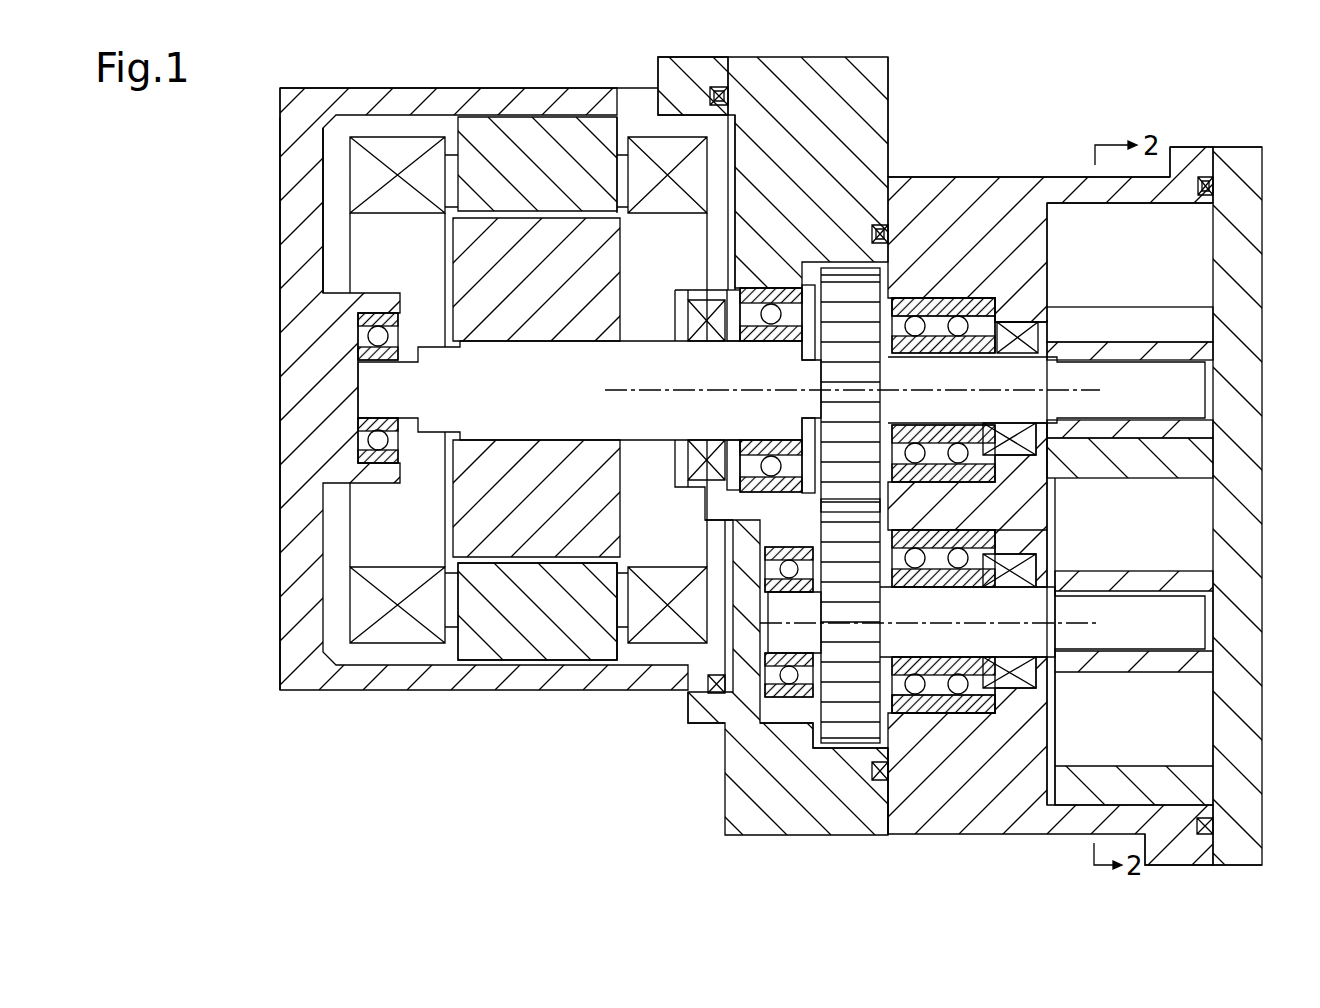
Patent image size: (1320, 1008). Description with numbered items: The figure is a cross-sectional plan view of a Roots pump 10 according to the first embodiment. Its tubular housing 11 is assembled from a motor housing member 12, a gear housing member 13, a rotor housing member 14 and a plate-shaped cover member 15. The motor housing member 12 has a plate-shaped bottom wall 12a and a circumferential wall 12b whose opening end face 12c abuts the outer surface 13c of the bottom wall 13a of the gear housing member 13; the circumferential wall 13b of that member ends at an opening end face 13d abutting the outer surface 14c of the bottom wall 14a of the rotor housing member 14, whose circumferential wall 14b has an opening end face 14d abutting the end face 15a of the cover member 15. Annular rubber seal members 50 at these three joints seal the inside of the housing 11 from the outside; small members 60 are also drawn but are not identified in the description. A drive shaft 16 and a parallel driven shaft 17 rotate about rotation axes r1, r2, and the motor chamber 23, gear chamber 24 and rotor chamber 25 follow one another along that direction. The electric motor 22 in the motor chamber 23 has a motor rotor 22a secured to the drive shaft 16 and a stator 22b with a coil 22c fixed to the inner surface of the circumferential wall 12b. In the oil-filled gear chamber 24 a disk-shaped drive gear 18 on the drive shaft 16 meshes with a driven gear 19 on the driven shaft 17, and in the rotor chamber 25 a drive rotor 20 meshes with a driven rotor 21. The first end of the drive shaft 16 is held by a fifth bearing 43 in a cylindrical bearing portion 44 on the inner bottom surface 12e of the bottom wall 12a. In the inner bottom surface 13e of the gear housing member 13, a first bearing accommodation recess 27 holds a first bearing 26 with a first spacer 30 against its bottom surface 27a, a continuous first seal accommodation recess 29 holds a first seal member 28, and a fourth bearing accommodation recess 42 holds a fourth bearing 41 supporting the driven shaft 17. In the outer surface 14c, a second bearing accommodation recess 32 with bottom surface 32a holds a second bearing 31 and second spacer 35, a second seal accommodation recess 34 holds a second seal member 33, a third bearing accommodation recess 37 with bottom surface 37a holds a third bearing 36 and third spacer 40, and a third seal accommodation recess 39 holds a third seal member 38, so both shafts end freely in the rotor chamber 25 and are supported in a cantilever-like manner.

The Roots pump 10 is at (1208, 88).
The housing 11 is at (284, 88).
The motor housing member 12 is at (400, 90).
The bottom wall 12a is at (283, 224).
The circumferential wall 12b is at (535, 92).
The opening end face 12c is at (738, 65).
The inner bottom surface 12e is at (323, 174).
The gear housing member 13 is at (725, 800).
The bottom wall 13a is at (727, 583).
The circumferential wall 13b is at (876, 158).
The outer surface 13c is at (728, 62).
The opening end face 13d is at (893, 807).
The inner bottom surface 13e is at (817, 733).
The rotor housing member 14 is at (1188, 147).
The bottom wall 14a is at (975, 230).
The circumferential wall 14b is at (1083, 193).
The outer surface 14c is at (882, 823).
The opening end face 14d is at (1218, 850).
The cover member 15 is at (1233, 153).
The end face 15a is at (1208, 866).
The drive shaft 16 is at (655, 352).
The driven shaft 17 is at (1121, 645).
The drive gear 18 is at (885, 266).
The driven gear 19 is at (845, 723).
The drive rotor 20 is at (1190, 350).
The driven rotor 21 is at (1053, 787).
The electric motor 22 is at (483, 117).
The motor rotor 22a is at (458, 505).
The stator 22b is at (530, 655).
The coil 22c is at (392, 632).
The motor chamber 23 is at (648, 128).
The gear chamber 24 is at (825, 262).
The rotor chamber 25 is at (1150, 270).
The first bearing 26 is at (727, 493).
The first bearing accommodation recess 27 is at (763, 288).
The bottom surface 27a is at (732, 289).
The first seal member 28 is at (700, 300).
The first seal accommodation recess 29 is at (682, 487).
The first spacer 30 is at (713, 525).
The second bearing 31 is at (955, 297).
The second bearing accommodation recess 32 is at (923, 297).
The bottom surface 32a is at (990, 300).
The second seal member 33 is at (1050, 462).
The second seal accommodation recess 34 is at (1020, 322).
The second spacer 35 is at (987, 297).
The third bearing 36 is at (960, 530).
The third bearing accommodation recess 37 is at (950, 714).
The bottom surface 37a is at (985, 700).
The third seal member 38 is at (1036, 685).
The third seal accommodation recess 39 is at (1036, 562).
The third spacer 40 is at (997, 548).
The fourth bearing 41 is at (790, 697).
The fourth bearing accommodation recess 42 is at (812, 548).
The fifth bearing 43 is at (377, 466).
The bearing portion 44 is at (380, 310).
The seal members 50 is at (728, 100).
The O-ring 60 is at (728, 92).
The rotation axis r1 is at (950, 380).
The rotation axis r2 is at (950, 615).